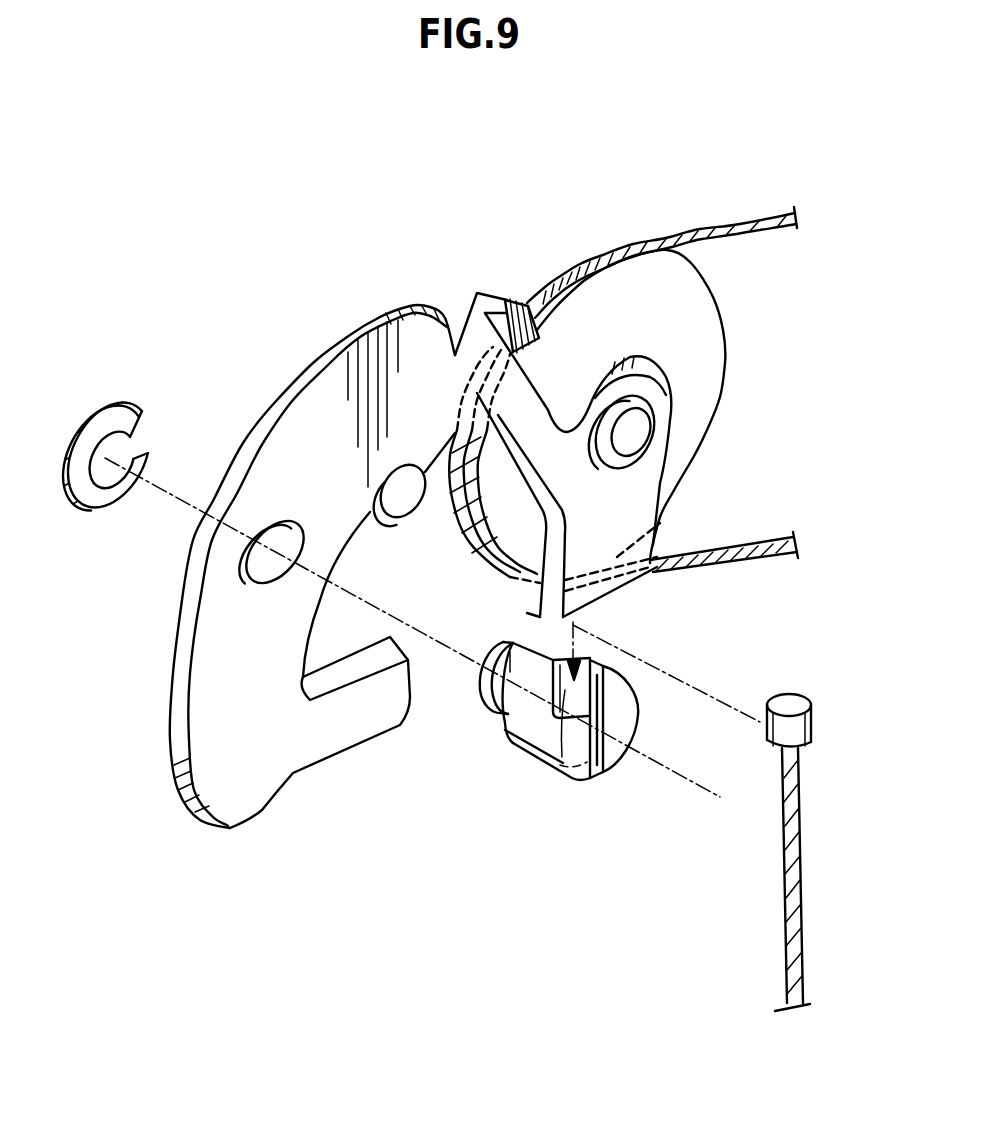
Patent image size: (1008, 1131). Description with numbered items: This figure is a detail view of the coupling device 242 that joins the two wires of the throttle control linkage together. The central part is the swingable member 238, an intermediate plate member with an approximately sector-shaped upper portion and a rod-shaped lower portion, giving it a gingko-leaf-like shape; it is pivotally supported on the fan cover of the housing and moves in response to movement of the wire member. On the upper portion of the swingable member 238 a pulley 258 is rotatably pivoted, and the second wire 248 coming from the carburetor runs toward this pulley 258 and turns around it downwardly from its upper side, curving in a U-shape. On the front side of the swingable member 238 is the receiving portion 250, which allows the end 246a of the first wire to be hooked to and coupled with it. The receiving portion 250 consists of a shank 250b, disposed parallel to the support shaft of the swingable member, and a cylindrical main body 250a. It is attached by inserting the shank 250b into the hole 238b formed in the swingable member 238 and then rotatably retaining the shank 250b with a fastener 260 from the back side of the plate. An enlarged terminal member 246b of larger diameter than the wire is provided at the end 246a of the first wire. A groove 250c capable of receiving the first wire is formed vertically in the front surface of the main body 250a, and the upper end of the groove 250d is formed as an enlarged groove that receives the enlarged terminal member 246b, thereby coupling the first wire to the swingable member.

The swingable member 238 is at (313, 453).
The hole 238b is at (245, 555).
The coupling device 242 is at (506, 272).
The end of the first wire 246a is at (797, 860).
The enlarged terminal member 246b is at (787, 707).
The second wire 248 is at (718, 228).
The receiving portion 250 is at (559, 739).
The cylindrical main body 250a is at (543, 763).
The shank 250b is at (488, 702).
The groove 250c is at (593, 763).
The upper end of the groove 250d is at (581, 664).
The pulley 258 is at (608, 320).
The fastener 260 is at (109, 428).